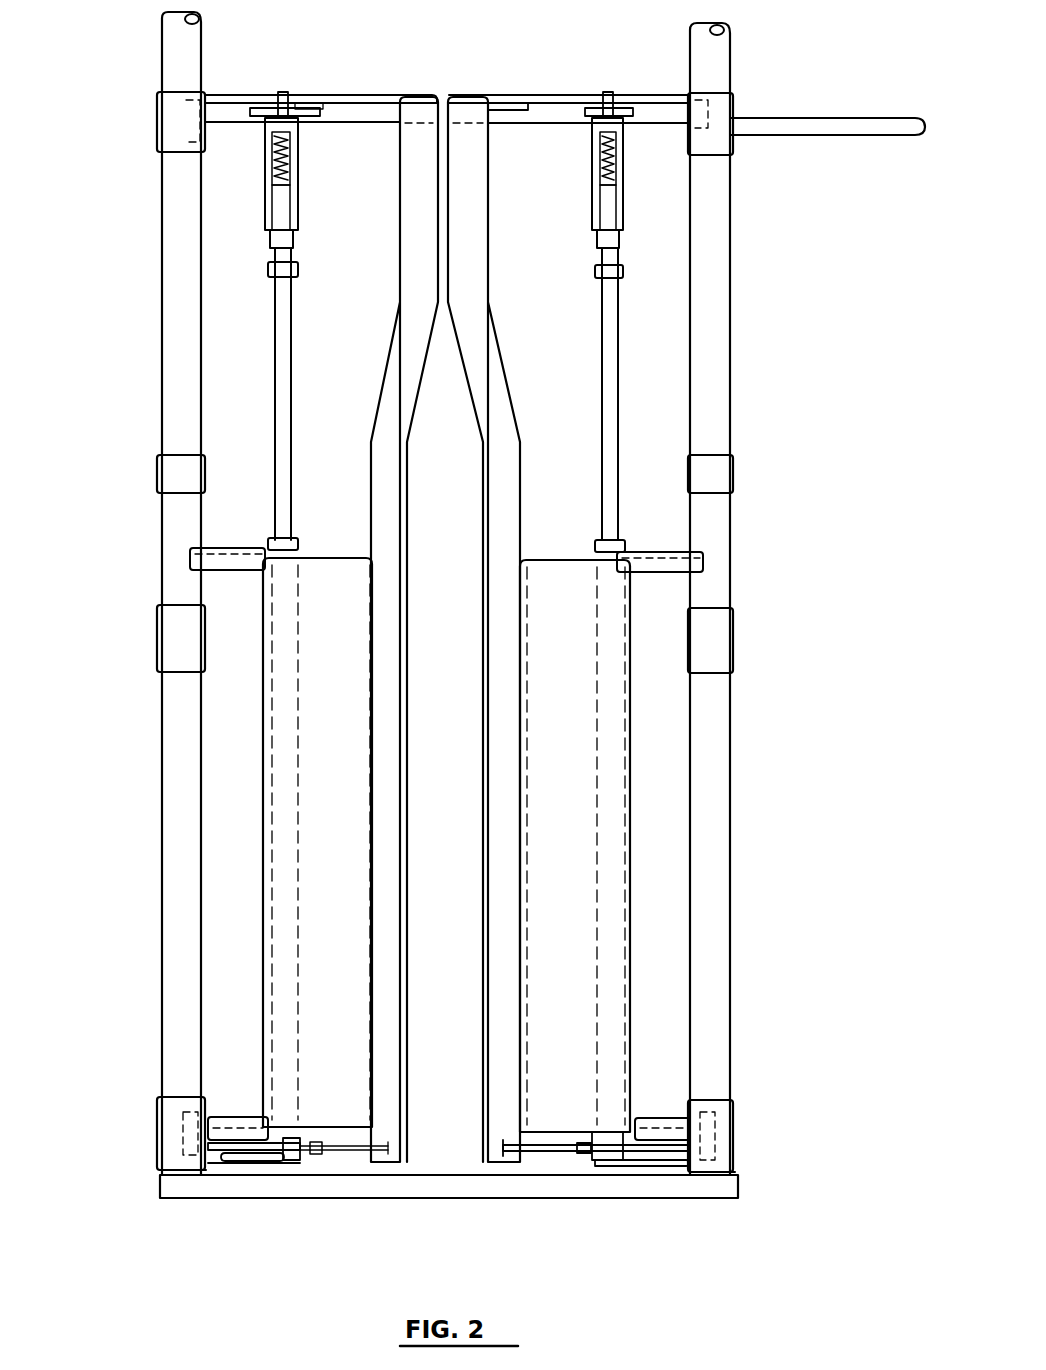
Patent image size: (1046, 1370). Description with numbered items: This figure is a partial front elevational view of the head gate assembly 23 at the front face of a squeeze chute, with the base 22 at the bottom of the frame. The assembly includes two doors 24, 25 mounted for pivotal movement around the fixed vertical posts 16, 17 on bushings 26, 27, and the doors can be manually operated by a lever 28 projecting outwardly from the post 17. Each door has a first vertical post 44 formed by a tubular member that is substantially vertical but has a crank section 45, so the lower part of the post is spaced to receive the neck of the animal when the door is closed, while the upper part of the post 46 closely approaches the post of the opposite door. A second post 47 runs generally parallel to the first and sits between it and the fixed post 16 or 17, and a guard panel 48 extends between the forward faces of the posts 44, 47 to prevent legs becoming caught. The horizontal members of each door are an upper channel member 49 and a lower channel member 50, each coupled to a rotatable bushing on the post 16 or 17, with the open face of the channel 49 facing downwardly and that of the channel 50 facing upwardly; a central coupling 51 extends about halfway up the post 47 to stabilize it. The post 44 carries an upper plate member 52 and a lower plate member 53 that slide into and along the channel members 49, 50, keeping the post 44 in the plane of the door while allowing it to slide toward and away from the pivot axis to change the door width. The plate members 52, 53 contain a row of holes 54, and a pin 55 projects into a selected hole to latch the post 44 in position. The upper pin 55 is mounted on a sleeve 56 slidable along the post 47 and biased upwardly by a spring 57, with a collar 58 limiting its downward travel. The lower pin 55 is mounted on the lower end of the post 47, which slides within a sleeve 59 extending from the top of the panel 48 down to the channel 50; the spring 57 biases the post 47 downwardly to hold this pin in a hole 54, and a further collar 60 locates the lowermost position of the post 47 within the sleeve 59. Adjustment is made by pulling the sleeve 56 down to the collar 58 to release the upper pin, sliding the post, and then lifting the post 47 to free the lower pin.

The vertical post 16 is at (178, 45).
The vertical post 17 is at (720, 60).
The base 22 is at (372, 1185).
The head gate assembly 23 is at (806, 316).
The door 24 is at (236, 887).
The door 25 is at (660, 868).
The bushing 26 is at (165, 118).
The bushing 27 is at (730, 148).
The lever 28 is at (898, 115).
The first vertical post 44 is at (508, 920).
The crank section 45 is at (395, 352).
The upper part of the post 46 is at (478, 252).
The second post 47 is at (622, 355).
The guard panel 48 is at (572, 595).
The upper channel member 49 is at (660, 105).
The lower channel member 50 is at (645, 1120).
The central coupling 51 is at (662, 552).
The upper plate member 52 is at (515, 108).
The lower plate member 53 is at (546, 1134).
The holes 54 is at (570, 1160).
The pin 55 is at (605, 97).
The sleeve 56 is at (595, 195).
The spring 57 is at (618, 158).
The collar 58 is at (622, 272).
The sleeve 59 is at (605, 740).
The collar 60 is at (600, 540).